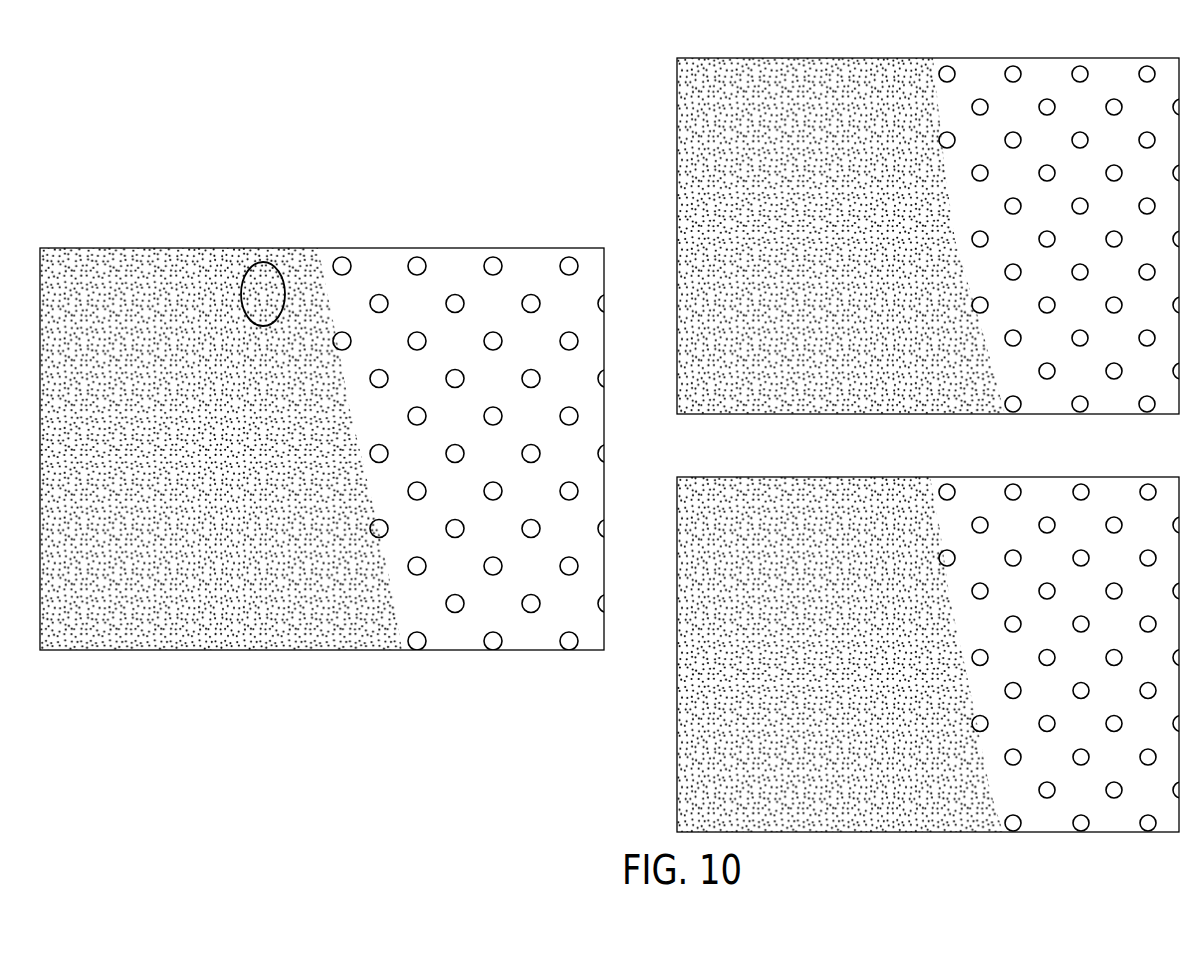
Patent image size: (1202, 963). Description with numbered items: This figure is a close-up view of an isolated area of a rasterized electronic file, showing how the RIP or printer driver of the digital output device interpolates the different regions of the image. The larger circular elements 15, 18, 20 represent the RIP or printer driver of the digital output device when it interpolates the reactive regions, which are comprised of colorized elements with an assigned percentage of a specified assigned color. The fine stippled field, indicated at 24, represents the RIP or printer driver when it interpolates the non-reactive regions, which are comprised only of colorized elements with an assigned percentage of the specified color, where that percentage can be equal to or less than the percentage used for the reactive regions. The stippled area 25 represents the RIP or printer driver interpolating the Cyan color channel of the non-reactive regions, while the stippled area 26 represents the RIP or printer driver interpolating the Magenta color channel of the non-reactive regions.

The RIP or printer driver interpolation of reactive regions 15 is at (380, 295).
The RIP or printer driver interpolation of reactive regions 18 is at (949, 67).
The RIP or printer driver interpolation of reactive regions 20 is at (982, 517).
The RIP or printer driver interpolation of non-reactive regions 24 is at (260, 289).
The RIP or printer driver interpolation of Cyan color channel of non-reactive region 25 is at (823, 76).
The RIP or printer driver interpolation of Magenta color channel of non-reactive reg 26 is at (833, 494).